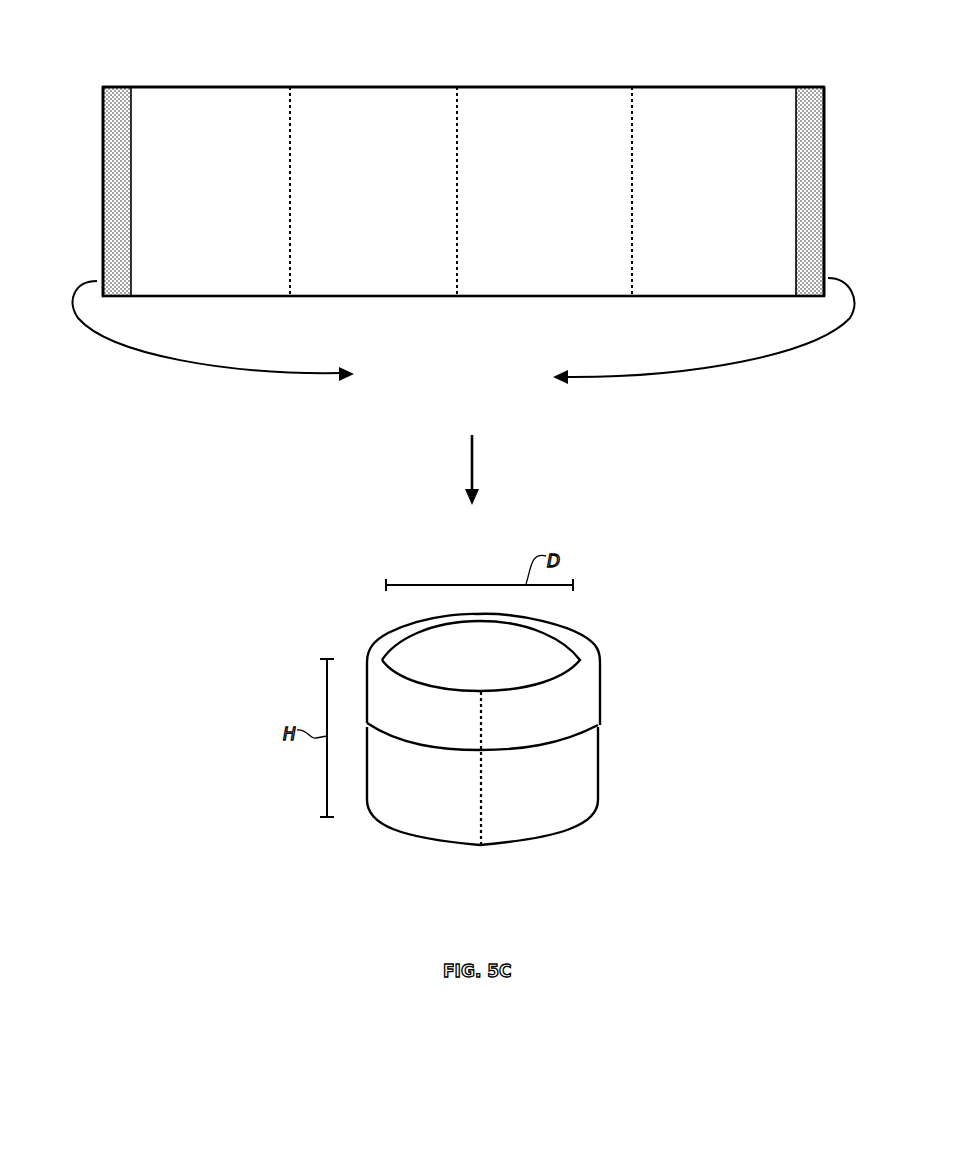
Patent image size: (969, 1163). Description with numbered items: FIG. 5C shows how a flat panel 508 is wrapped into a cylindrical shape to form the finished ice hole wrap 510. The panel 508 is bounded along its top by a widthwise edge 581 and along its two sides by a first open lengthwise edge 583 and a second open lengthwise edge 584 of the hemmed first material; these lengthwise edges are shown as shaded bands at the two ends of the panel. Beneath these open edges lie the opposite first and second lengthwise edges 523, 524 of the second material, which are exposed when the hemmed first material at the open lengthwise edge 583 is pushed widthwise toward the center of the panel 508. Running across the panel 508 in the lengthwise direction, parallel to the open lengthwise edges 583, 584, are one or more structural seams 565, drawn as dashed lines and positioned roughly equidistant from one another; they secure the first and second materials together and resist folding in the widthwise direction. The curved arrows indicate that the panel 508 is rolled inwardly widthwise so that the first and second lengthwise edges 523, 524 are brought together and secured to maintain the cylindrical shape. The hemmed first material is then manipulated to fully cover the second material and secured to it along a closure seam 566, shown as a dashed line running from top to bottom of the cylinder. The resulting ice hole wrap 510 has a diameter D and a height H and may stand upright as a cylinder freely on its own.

The panel 508 is at (706, 107).
The widthwise edge 581 is at (597, 87).
The first open lengthwise edge 583 is at (798, 101).
The second open lengthwise edge 584 is at (131, 116).
The first lengthwise edge of second material 523 is at (103, 182).
The second lengthwise edge of second material 524 is at (824, 182).
The structural seam 565 is at (290, 182).
The closure seam 566 is at (481, 810).
The ice hole wrap 510 is at (348, 596).